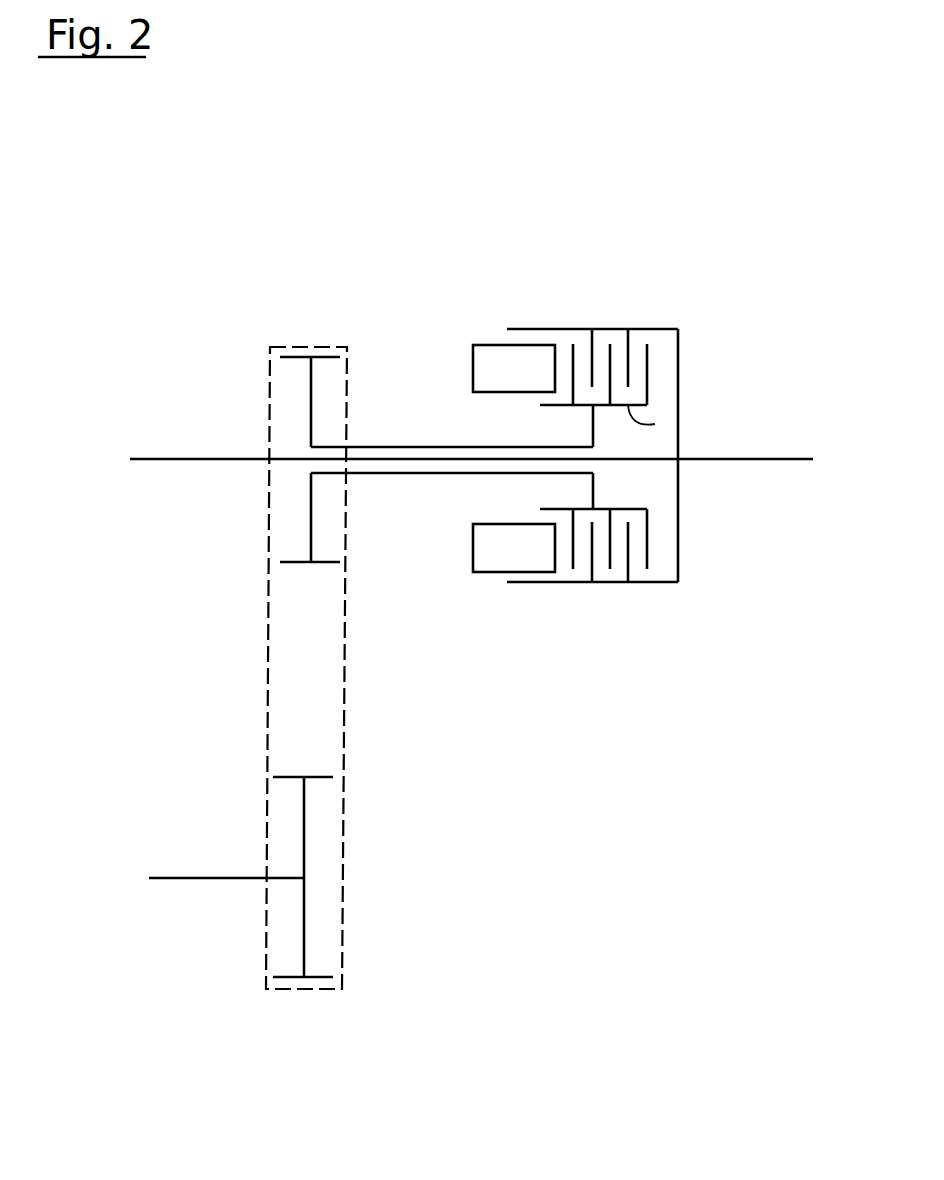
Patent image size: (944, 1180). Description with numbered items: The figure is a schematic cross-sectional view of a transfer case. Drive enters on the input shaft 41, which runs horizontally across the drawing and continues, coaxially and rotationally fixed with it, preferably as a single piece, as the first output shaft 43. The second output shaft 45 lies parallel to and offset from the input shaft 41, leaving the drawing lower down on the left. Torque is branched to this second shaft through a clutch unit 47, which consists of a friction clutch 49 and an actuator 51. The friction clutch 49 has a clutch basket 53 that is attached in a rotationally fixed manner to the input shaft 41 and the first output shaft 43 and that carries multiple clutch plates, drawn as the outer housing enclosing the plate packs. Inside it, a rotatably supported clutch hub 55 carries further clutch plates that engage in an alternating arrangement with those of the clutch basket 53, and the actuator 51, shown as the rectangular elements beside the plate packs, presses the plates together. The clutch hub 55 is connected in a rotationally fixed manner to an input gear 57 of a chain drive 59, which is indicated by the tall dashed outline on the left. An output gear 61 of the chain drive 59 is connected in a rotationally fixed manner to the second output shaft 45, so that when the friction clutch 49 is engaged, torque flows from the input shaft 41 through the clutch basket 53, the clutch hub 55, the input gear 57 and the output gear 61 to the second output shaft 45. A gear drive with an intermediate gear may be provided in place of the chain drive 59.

The input shaft 41 is at (165, 457).
The first output shaft 43 is at (788, 455).
The second output shaft 45 is at (177, 876).
The clutch unit 47 is at (571, 392).
The friction clutch 49 is at (616, 322).
The actuator 51 is at (460, 355).
The clutch basket 53 is at (658, 327).
The clutch hub 55 is at (655, 422).
The input gear 57 is at (308, 385).
The chain drive 59 is at (262, 676).
The output gear 61 is at (304, 928).